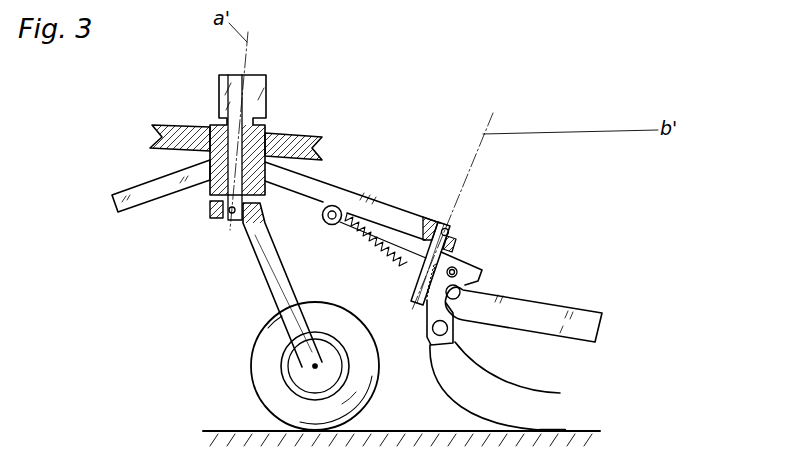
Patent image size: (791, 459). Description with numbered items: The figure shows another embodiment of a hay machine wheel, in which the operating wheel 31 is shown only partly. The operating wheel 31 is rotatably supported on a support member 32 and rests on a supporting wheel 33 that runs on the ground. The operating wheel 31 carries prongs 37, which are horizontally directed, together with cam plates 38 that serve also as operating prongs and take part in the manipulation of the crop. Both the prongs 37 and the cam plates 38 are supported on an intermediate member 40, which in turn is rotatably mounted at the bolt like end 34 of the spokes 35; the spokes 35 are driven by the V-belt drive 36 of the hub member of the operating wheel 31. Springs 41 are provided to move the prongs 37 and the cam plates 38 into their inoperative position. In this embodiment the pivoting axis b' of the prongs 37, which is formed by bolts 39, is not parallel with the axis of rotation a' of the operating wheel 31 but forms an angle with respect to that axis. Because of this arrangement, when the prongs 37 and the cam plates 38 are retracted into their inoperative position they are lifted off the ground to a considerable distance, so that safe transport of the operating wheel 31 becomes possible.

The operating wheel 31 is at (331, 101).
The support member 32 is at (257, 77).
The supporting wheel 33 is at (253, 350).
The bolt like end 34 is at (457, 243).
The spokes 35 is at (373, 213).
The V-belt drive 36 is at (305, 143).
The prongs 37 is at (541, 387).
The cam plates 38 is at (581, 308).
The bolts 39 is at (452, 226).
The intermediate member 40 is at (470, 265).
The springs 41 is at (388, 231).